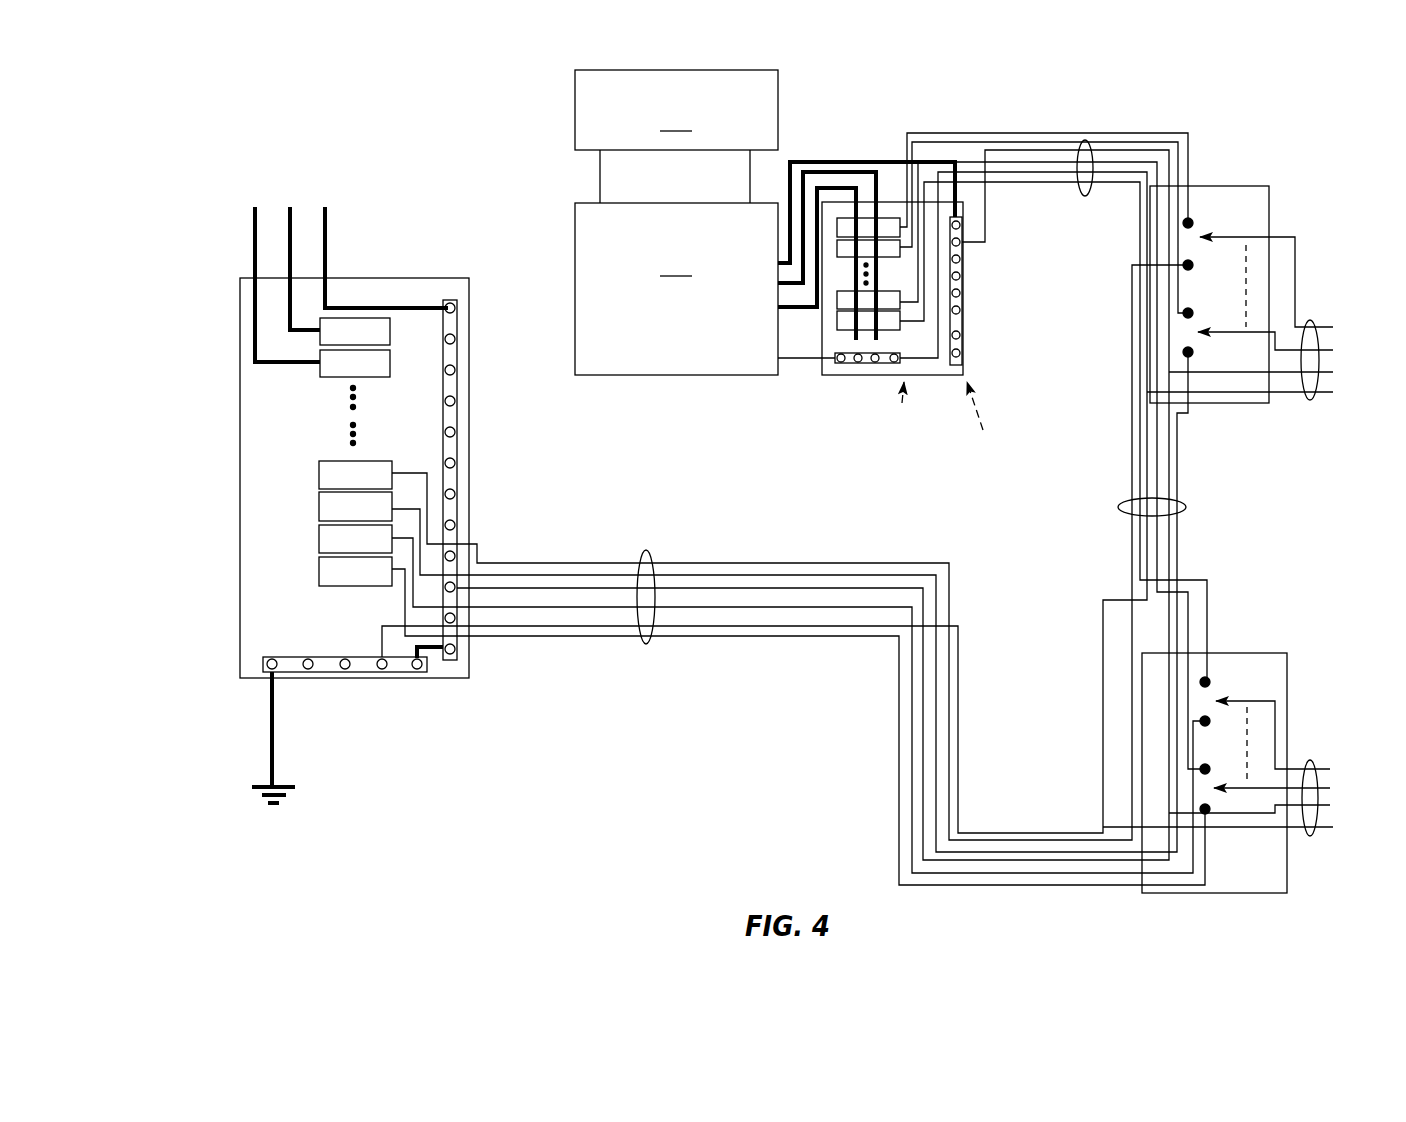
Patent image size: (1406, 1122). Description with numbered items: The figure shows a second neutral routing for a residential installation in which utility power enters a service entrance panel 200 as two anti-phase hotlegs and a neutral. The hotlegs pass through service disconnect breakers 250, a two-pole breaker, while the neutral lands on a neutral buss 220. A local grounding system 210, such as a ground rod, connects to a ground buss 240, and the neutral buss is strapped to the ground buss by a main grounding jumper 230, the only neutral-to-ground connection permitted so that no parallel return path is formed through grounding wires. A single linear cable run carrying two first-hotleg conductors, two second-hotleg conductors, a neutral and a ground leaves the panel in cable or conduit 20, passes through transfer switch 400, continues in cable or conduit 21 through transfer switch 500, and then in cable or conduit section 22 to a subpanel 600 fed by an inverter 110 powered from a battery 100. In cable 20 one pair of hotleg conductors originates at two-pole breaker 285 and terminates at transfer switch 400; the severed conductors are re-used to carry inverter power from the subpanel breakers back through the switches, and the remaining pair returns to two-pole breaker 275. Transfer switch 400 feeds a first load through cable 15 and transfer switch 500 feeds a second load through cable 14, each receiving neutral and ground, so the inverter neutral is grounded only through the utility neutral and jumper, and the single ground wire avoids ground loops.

The battery 100 is at (676, 110).
The inverter 110 is at (676, 289).
The subpanel 600 is at (971, 186).
The cable/conduit section 22 is at (1089, 140).
The transfer switch 500 is at (1263, 180).
The cable 14 is at (1312, 403).
The cable or conduit 21 is at (1188, 503).
The transfer switch 400 is at (1254, 648).
The cable 15 is at (1318, 758).
The cable or conduit 20 is at (672, 508).
The service disconnect breakers 250 is at (346, 326).
The neutral buss 220 is at (448, 298).
The 2-pole breaker 275 is at (307, 488).
The 2-pole breaker 285 is at (307, 560).
The service entrance panel 200 is at (479, 662).
The main grounding jumper 230 is at (441, 660).
The ground buss 240 is at (371, 676).
The local grounding system 210 is at (309, 792).